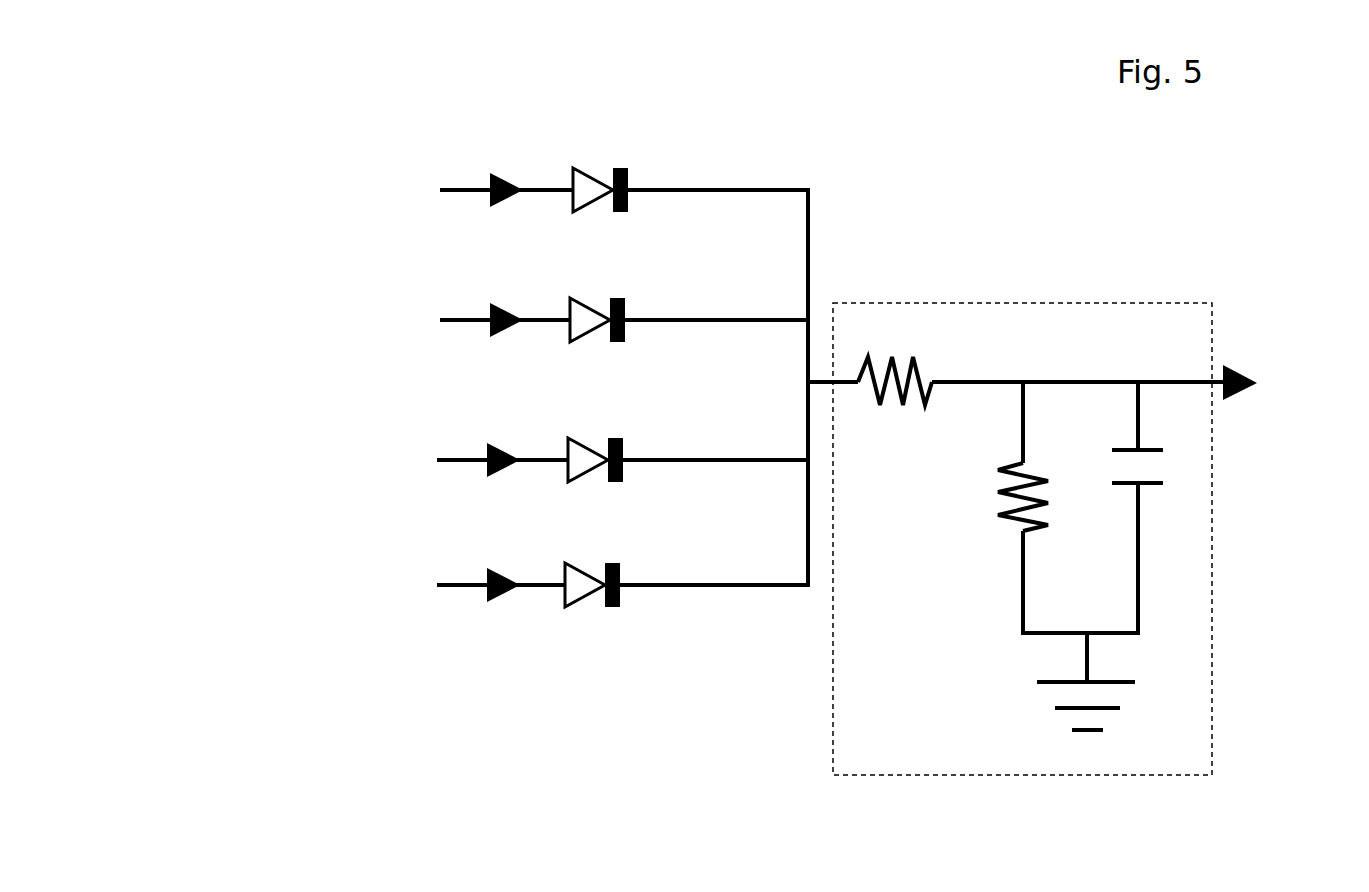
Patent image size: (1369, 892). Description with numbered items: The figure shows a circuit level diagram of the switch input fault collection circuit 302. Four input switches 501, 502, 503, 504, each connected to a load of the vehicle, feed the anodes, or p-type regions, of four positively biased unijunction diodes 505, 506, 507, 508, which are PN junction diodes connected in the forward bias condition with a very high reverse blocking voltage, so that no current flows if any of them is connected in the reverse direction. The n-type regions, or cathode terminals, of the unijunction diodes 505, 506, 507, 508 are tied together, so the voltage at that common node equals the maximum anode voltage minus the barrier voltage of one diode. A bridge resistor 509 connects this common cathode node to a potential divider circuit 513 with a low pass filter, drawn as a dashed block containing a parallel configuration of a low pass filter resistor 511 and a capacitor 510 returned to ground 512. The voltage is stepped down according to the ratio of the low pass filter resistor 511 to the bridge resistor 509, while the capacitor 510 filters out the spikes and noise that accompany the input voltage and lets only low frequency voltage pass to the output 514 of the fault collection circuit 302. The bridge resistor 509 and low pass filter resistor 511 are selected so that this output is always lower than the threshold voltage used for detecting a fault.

The fault collection circuit 302 is at (215, 137).
The input switch 501 is at (462, 188).
The input switch 502 is at (462, 320).
The input switch 503 is at (465, 458).
The input switch 504 is at (443, 583).
The unijunction diode 505 is at (590, 170).
The unijunction diode 506 is at (595, 303).
The unijunction diode 507 is at (570, 442).
The unijunction diode 508 is at (570, 568).
The bridge resistor 509 is at (913, 360).
The capacitor 510 is at (1153, 492).
The low pass filter resistor 511 is at (997, 523).
The ground 512 is at (1117, 718).
The potential divider circuit 513 is at (1212, 693).
The output 514 is at (1240, 370).